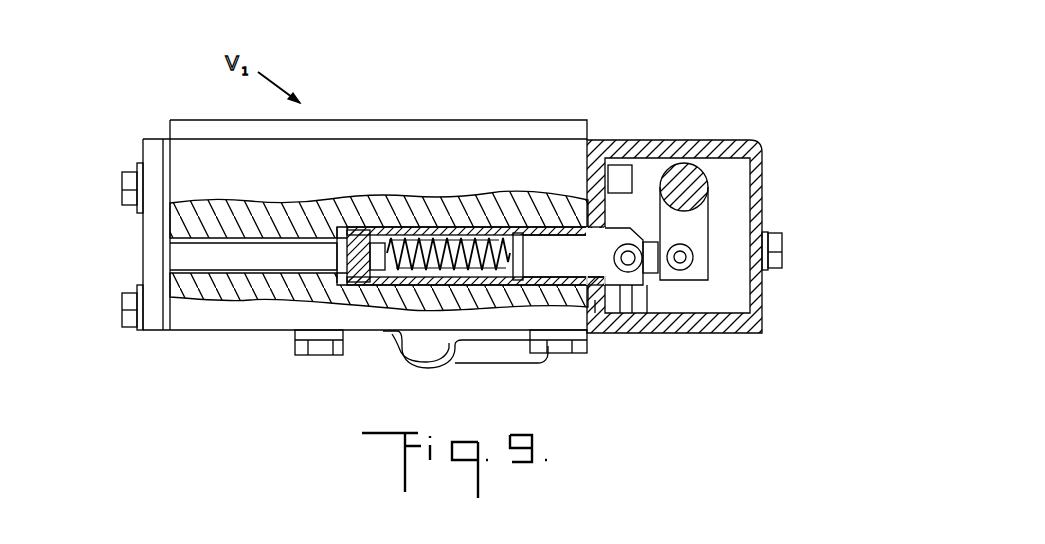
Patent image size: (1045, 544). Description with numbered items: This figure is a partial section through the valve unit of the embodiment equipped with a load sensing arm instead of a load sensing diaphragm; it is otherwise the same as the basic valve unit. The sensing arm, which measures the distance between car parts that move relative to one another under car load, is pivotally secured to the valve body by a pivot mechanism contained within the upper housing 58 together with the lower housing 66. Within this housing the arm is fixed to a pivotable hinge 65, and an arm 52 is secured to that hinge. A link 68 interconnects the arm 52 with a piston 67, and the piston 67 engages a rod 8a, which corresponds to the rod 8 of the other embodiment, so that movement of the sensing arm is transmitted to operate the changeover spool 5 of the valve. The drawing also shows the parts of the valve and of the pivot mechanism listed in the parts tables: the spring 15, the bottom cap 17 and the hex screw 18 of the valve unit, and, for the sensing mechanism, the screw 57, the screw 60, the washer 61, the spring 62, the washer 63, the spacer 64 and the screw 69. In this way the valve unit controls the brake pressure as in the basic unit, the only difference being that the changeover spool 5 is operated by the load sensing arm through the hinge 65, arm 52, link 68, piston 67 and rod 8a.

The spool 5 is at (392, 287).
The rod 8 is at (750, 333).
The rod 8a is at (485, 240).
The spring 15 is at (708, 180).
The bottom cap 17 is at (630, 310).
The hex screw 18 is at (652, 262).
The arm 52 is at (702, 235).
The screw 57 is at (622, 165).
The upper housing 58 is at (753, 140).
The screw 60 is at (372, 230).
The washer 61 is at (390, 243).
The spring 62 is at (445, 232).
The washer 63 is at (519, 233).
The spacer 64 is at (543, 203).
The hinge 65 is at (704, 162).
The lower housing 66 is at (595, 337).
The piston 67 is at (620, 308).
The link 68 is at (648, 307).
The screw 69 is at (627, 243).